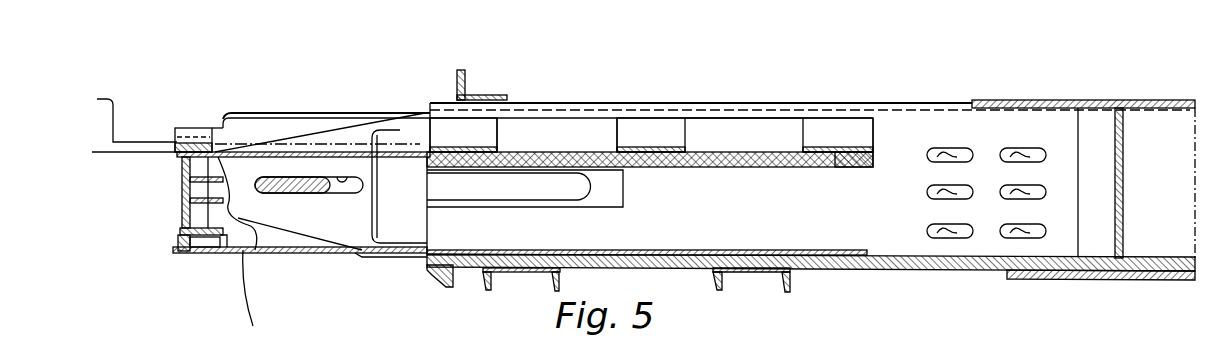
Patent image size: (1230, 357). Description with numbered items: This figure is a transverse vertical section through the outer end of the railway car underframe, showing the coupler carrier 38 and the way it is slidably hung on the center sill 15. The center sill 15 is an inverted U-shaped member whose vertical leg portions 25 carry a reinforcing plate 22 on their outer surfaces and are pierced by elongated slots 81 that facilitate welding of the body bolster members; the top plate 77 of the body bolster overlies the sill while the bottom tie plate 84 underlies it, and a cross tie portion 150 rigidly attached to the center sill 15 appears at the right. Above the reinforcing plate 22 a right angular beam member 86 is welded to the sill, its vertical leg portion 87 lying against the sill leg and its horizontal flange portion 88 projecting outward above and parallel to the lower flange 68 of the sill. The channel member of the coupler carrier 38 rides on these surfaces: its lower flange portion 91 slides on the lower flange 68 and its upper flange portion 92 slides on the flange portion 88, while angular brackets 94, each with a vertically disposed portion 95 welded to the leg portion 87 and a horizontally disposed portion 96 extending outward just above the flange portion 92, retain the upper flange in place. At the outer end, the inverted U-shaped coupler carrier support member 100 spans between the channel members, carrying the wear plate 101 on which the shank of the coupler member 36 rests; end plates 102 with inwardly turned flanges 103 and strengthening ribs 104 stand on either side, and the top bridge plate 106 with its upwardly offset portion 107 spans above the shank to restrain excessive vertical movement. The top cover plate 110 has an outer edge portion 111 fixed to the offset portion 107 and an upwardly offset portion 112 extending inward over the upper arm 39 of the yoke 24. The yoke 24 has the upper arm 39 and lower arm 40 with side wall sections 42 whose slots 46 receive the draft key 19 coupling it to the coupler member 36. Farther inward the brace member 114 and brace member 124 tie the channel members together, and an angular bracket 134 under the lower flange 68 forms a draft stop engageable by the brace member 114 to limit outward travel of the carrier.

The center sill 15 is at (918, 104).
The draft key 19 is at (293, 194).
The reinforcing plate 22 is at (605, 197).
The yoke 24 is at (395, 258).
The vertical leg portion 25 is at (820, 225).
The coupler member 36 is at (113, 160).
The coupler carrier 38 is at (233, 257).
The upper arm 39 is at (418, 118).
The lower arm 40 is at (422, 250).
The side wall section 42 is at (310, 142).
The slot 46 is at (345, 176).
The lower flange 68 is at (942, 270).
The top plate 77 is at (1054, 100).
The elongated slot 81 is at (1008, 160).
The bottom tie plate 84 is at (1110, 281).
The beam member 86 is at (713, 119).
The vertical leg portion 87 is at (752, 132).
The flange portion 88 is at (758, 168).
The flange portion 91 is at (832, 251).
The flange portion 92 is at (398, 156).
The angular bracket 94 is at (616, 129).
The vertically disposed portion 95 is at (488, 135).
The horizontally disposed portion 96 is at (618, 150).
The coupler carrier support member 100 is at (189, 255).
The wear plate 101 is at (238, 291).
The end plate 102 is at (183, 216).
The inwardly turned flange 103 is at (181, 172).
The strengthening rib 104 is at (188, 182).
The top bridge plate 106 is at (173, 149).
The upwardly offset portion 107 is at (170, 131).
The top cover plate 110 is at (263, 113).
The outer edge portion 111 is at (197, 132).
The upwardly offset portion 112 is at (355, 113).
The brace member 114 is at (485, 273).
The brace member 124 is at (790, 287).
The angular bracket 134 is at (457, 287).
The cross tie portion 150 is at (1123, 180).